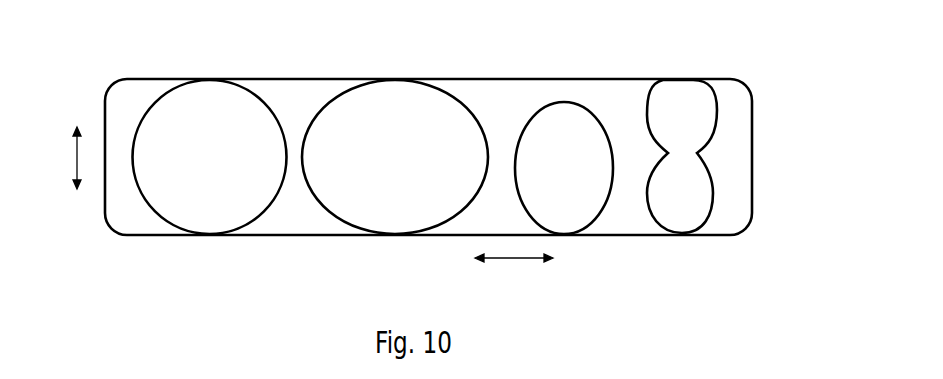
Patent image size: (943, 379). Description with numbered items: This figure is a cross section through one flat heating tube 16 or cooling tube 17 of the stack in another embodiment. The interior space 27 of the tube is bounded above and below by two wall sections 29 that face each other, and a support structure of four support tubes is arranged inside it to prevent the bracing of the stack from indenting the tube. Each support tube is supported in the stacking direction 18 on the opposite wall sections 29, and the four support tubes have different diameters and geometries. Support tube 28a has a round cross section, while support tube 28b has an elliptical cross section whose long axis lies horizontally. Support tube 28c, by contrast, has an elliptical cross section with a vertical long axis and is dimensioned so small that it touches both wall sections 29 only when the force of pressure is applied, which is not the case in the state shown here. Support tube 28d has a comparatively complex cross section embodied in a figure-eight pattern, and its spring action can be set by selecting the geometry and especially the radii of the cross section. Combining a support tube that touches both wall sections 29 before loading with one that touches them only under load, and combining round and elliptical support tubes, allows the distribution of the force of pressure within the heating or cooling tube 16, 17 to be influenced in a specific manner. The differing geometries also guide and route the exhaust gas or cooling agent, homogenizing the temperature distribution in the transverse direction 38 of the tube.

The heating tube 16 is at (782, 86).
The cooling tube 17 is at (428, 166).
The interior space 27 is at (507, 110).
The wall sections 29 is at (293, 78).
The support tube 28a is at (137, 187).
The support tube 28b is at (308, 185).
The support tube 28c is at (518, 181).
The support tube 28d is at (650, 205).
The stacking direction 18 is at (75, 158).
The transverse direction 38 is at (510, 259).